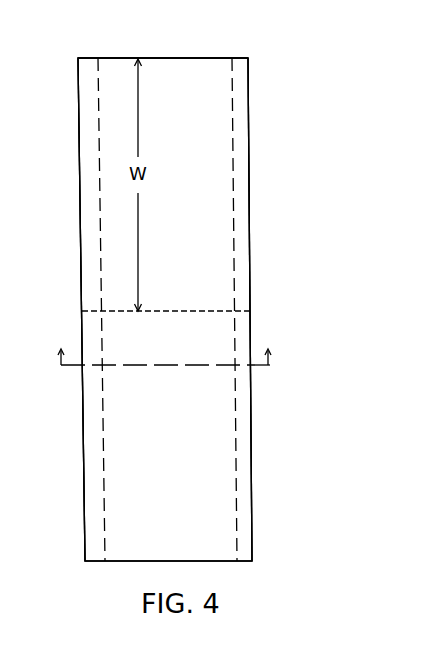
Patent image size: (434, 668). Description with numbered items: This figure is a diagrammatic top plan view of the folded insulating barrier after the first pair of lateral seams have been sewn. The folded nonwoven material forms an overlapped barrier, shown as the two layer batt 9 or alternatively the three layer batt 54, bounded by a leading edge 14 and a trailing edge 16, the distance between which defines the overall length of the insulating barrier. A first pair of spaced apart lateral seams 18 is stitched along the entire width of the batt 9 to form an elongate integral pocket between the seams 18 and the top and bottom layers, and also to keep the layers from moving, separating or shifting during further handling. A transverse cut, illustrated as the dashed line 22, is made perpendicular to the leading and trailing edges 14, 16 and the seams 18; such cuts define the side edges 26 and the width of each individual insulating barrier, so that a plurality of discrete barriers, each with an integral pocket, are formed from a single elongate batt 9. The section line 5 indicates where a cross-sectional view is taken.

The two layer batt 9 is at (256, 192).
The three layer batt 54 is at (256, 192).
The side edges 26 is at (196, 58).
The first pair of spaced apart lateral seams 18 is at (98, 92).
The transverse cuts 22 is at (213, 310).
The section line 5- 5 is at (164, 345).
The trailing edge 16 is at (254, 484).
The leading edge 14 is at (84, 486).